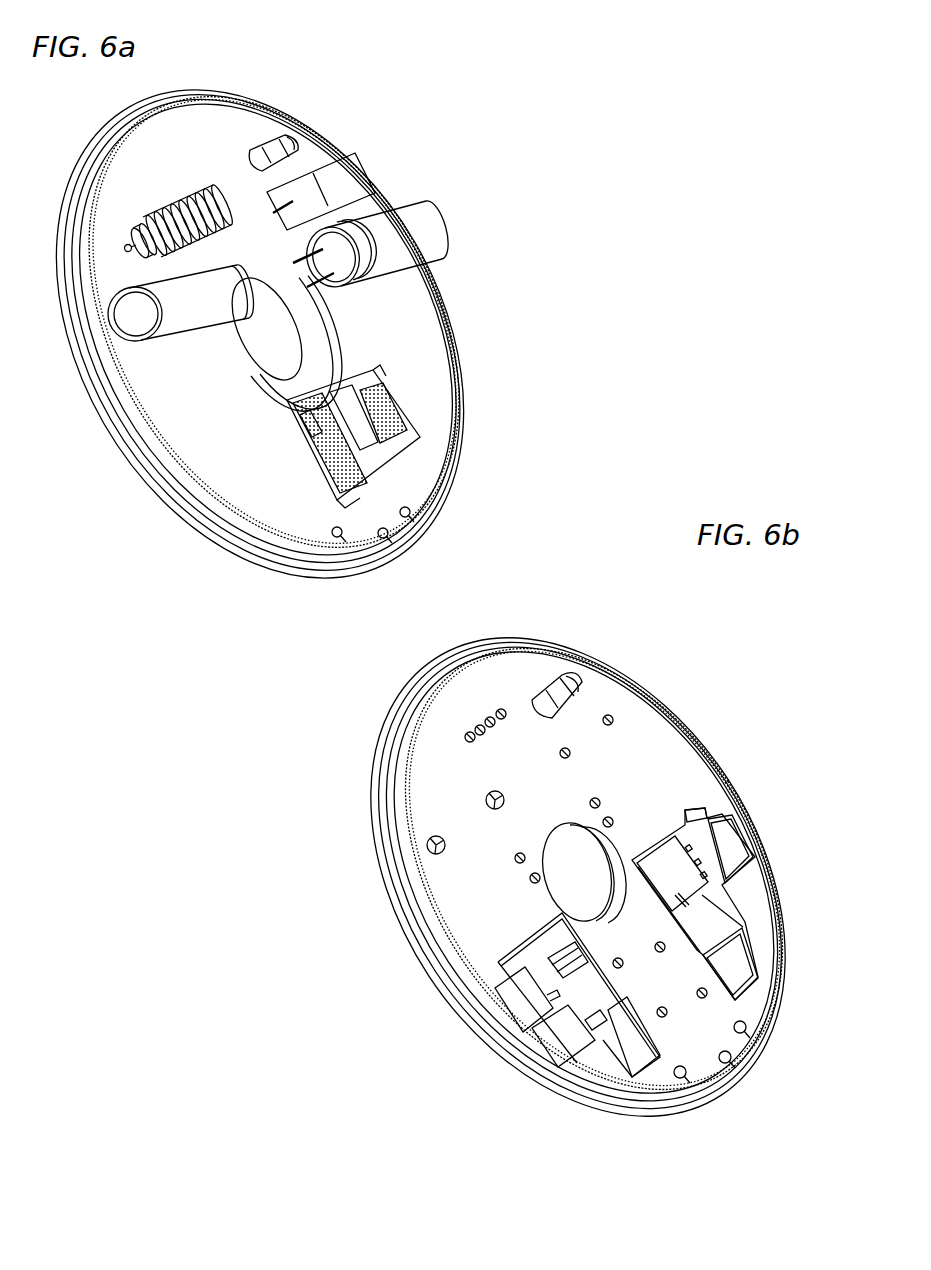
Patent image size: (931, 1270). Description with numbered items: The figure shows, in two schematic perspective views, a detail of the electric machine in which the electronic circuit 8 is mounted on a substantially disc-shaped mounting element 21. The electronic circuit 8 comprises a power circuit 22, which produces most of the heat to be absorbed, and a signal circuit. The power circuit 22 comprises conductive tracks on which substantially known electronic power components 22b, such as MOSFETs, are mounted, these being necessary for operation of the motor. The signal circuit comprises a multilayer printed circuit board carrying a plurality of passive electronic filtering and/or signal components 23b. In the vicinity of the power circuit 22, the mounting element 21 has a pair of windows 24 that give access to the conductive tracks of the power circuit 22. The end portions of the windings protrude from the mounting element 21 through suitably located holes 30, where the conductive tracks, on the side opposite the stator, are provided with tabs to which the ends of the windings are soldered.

In FIG. 6a, the electronic circuit 8 is at (290, 334).
In FIG. 6b, the electronic circuit 8 is at (578, 877).
In FIG. 6a, the mounting element 21 is at (130, 437).
In FIG. 6b, the mounting element 21 is at (371, 884).
In FIG. 6b, the power circuit 22 is at (746, 916).
In FIG. 6b, the electronic power components 22b is at (752, 893).
In FIG. 6a, the passive electronic filtering and/or signal components 23b is at (387, 396).
In FIG. 6b, the windows 24 is at (682, 828).
In FIG. 6a, the holes 30 is at (346, 540).
In FIG. 6b, the holes 30 is at (745, 1036).